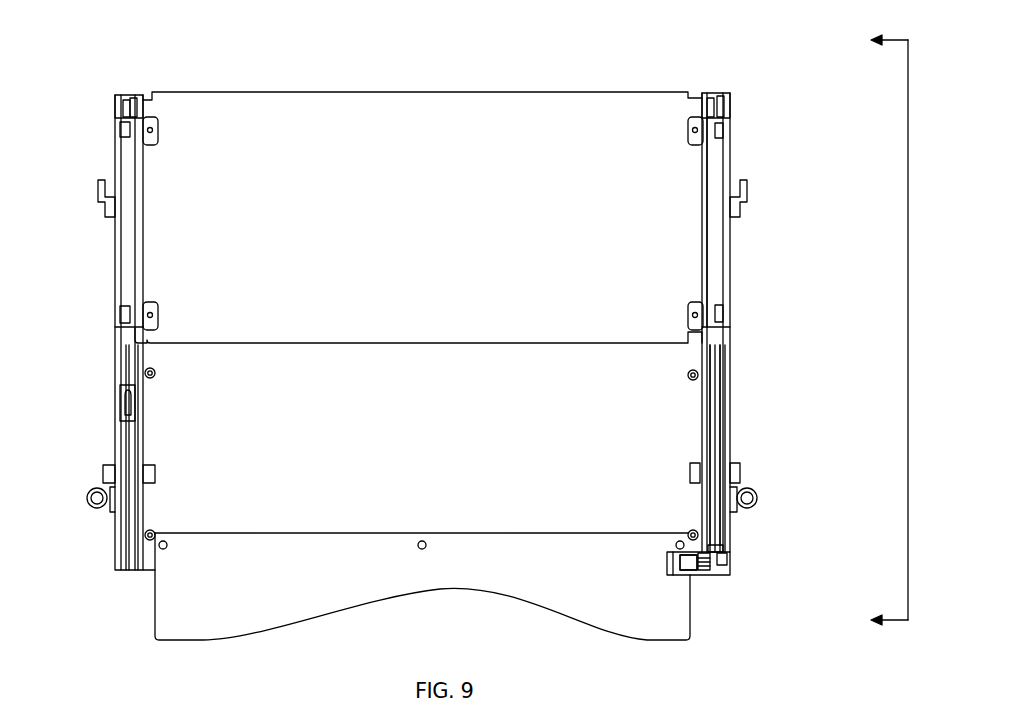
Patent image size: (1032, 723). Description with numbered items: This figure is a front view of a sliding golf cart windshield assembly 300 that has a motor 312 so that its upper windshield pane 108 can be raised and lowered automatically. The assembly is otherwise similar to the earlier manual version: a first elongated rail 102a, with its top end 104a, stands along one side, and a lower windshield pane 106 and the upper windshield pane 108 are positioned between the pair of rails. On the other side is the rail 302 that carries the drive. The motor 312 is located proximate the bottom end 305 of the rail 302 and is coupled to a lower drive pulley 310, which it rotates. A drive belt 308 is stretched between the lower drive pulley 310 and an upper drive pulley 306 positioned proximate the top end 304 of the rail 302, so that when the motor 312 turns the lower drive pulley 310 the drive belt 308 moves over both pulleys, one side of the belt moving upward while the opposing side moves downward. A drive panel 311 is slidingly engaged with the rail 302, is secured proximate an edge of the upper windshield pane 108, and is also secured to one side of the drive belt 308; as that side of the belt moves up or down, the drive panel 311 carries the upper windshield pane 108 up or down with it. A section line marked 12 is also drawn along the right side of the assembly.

The sliding golf cart windshield assembly 300 is at (683, 37).
The section line 12- 12 is at (874, 333).
The first elongated rail 102a is at (137, 275).
The top end 104a is at (131, 99).
The lower windshield pane 106 is at (375, 518).
The upper windshield pane 108 is at (213, 130).
The rail 302 is at (732, 353).
The top end 304 is at (705, 93).
The bottom end 305 is at (722, 576).
The upper drive pulley 306 is at (732, 108).
The drive belt 308 is at (724, 428).
The lower drive pulley 310 is at (729, 557).
The drive panel 311 is at (714, 288).
The motor 312 is at (692, 572).